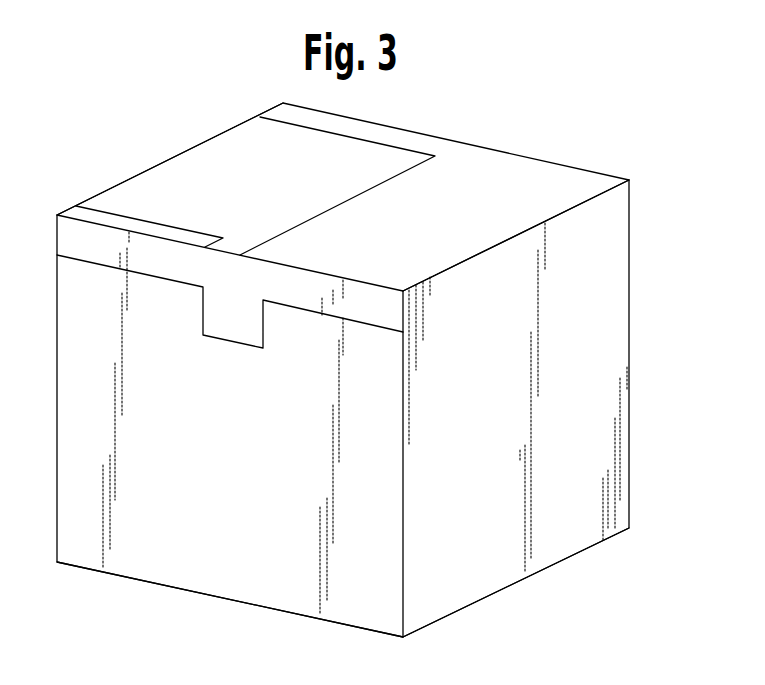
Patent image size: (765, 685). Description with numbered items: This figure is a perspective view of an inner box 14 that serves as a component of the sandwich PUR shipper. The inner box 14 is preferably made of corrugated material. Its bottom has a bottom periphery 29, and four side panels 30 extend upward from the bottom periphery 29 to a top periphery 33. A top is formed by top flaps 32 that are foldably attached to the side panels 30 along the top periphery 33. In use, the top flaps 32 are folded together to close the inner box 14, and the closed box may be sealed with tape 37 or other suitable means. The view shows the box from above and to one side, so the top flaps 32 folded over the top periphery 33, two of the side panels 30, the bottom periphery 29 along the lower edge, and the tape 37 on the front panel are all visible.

The inner box 14 is at (453, 102).
The bottom periphery 29 is at (123, 573).
The side panels 30 is at (605, 295).
The top flaps 32 is at (220, 159).
The top periphery 33 is at (108, 190).
The tape 37 is at (206, 318).